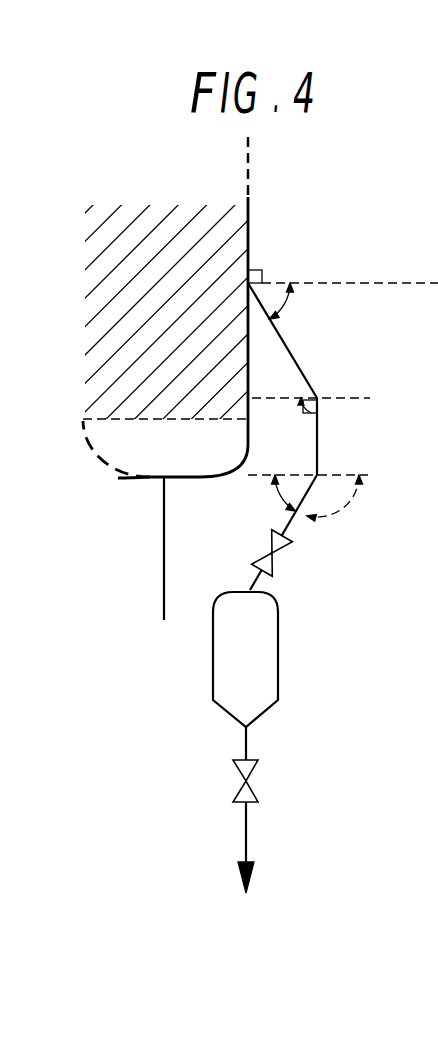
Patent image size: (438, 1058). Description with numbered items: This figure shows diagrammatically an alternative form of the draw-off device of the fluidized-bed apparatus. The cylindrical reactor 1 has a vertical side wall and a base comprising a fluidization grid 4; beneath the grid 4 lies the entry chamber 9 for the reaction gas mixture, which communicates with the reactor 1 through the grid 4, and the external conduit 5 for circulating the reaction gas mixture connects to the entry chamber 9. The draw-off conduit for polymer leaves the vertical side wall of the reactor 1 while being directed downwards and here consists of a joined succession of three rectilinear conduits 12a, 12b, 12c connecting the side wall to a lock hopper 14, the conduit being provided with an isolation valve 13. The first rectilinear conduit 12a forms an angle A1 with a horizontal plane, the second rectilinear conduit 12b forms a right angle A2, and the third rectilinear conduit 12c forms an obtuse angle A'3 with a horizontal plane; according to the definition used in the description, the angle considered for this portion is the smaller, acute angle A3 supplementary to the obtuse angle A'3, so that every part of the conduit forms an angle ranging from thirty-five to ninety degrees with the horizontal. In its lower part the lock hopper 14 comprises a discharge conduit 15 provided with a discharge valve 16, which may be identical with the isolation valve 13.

The cylindrical reactor 1 is at (248, 237).
The fluidization grid 4 is at (95, 422).
The external conduit 5 is at (163, 575).
The entry chamber 9 is at (120, 478).
The rectilinear conduit 12a is at (298, 358).
The rectilinear conduit 12b is at (317, 434).
The rectilinear conduit 12c is at (290, 522).
The isolation valve 13 is at (268, 548).
The lock hopper 14 is at (278, 665).
The discharge conduit 15 is at (246, 840).
The discharge valve 16 is at (250, 782).
The angle A1 is at (290, 308).
The right angle A2 is at (304, 409).
The acute angle A3 is at (283, 500).
The obtuse angle A'3 is at (360, 511).